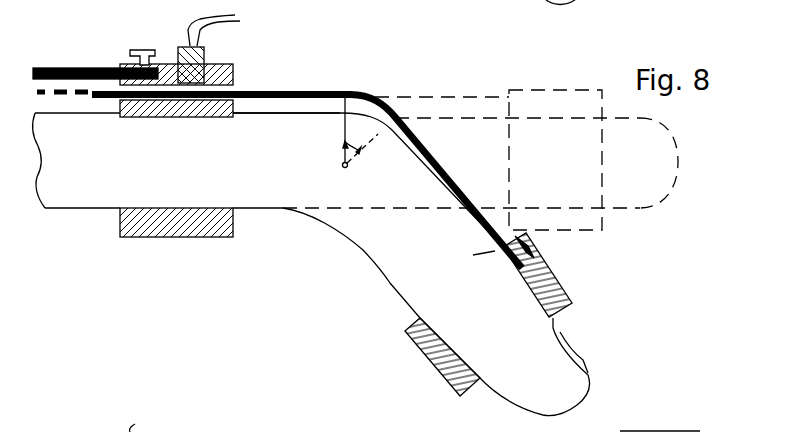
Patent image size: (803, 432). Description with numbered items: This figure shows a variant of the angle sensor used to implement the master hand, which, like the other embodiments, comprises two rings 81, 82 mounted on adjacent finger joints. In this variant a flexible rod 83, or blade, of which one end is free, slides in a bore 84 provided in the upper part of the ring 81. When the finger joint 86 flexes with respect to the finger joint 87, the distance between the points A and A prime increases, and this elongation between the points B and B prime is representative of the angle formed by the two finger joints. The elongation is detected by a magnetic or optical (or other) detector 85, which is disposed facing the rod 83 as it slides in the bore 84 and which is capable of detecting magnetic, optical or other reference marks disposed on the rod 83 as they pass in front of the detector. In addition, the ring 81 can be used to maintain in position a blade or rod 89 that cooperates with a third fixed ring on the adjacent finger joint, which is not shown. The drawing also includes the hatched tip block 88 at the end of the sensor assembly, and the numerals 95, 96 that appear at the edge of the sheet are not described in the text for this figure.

The ring 81 is at (187, 225).
The ring 82 is at (430, 358).
The flexible rod 83 is at (437, 163).
The bore 84 is at (233, 85).
The detector 85 is at (182, 50).
The finger joint 86 is at (408, 268).
The finger joint 87 is at (95, 188).
The tip block 88 is at (537, 275).
The blade or rod 89 is at (87, 68).
The element of adjacent figure 95 is at (157, 420).
The element of adjacent figure 96 is at (689, 418).